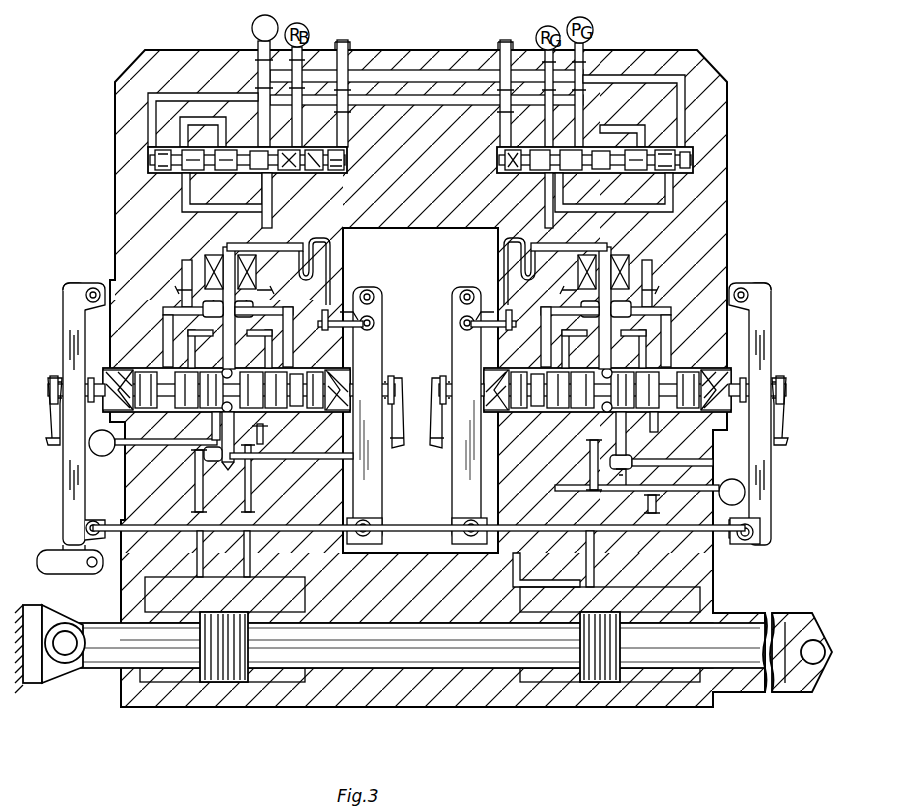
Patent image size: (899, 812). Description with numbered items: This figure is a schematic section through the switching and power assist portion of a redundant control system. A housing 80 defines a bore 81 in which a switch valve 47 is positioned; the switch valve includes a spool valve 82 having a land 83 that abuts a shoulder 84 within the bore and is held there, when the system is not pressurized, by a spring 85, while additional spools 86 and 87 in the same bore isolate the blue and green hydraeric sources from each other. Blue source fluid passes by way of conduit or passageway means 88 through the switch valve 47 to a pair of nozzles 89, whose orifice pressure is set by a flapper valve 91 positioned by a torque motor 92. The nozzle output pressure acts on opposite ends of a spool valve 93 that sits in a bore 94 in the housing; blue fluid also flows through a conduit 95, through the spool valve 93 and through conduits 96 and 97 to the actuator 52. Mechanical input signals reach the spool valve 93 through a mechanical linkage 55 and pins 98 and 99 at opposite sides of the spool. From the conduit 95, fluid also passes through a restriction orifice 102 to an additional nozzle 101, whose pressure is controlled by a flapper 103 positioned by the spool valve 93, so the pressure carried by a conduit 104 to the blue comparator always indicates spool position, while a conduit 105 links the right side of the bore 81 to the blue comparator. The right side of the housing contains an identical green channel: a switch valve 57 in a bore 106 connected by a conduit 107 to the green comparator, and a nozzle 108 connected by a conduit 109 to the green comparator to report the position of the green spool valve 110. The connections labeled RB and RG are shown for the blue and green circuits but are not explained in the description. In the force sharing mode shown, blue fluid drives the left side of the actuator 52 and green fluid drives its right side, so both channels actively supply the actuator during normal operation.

The housing 80 is at (125, 76).
The conduit or passageway means 88 is at (258, 60).
The conduit 105 is at (349, 50).
The conduit 107 is at (512, 44).
The conduit 95 is at (212, 117).
The spool 87 is at (168, 150).
The spool 86 is at (198, 150).
The shoulder 84 is at (230, 150).
The bore 81 is at (345, 152).
The spring 85 is at (346, 168).
The spool valve 82 is at (312, 173).
The switch valve 47 is at (263, 161).
The land 83 is at (240, 174).
The switch valve 57 is at (680, 195).
The bore 106 is at (526, 182).
The flapper valve 91 is at (205, 268).
The torque motor 92 is at (222, 252).
The nozzles 89 is at (203, 306).
The spool valve 93 is at (175, 413).
The bore 94 is at (122, 368).
The pin 98 is at (98, 378).
The pin 99 is at (372, 378).
The mechanical linkage 55 is at (72, 462).
The green spool valve 110 is at (560, 412).
The brake return port RB is at (153, 443).
The flapper 103 is at (204, 455).
The restriction orifice 102 is at (263, 440).
The conduit 96 is at (195, 482).
The conduit 97 is at (252, 480).
The nozzle 101 is at (290, 460).
The conduit 104 is at (351, 460).
The gear return port RG is at (650, 492).
The nozzle 108 is at (632, 462).
The conduit 109 is at (724, 459).
The actuator 52 is at (160, 707).